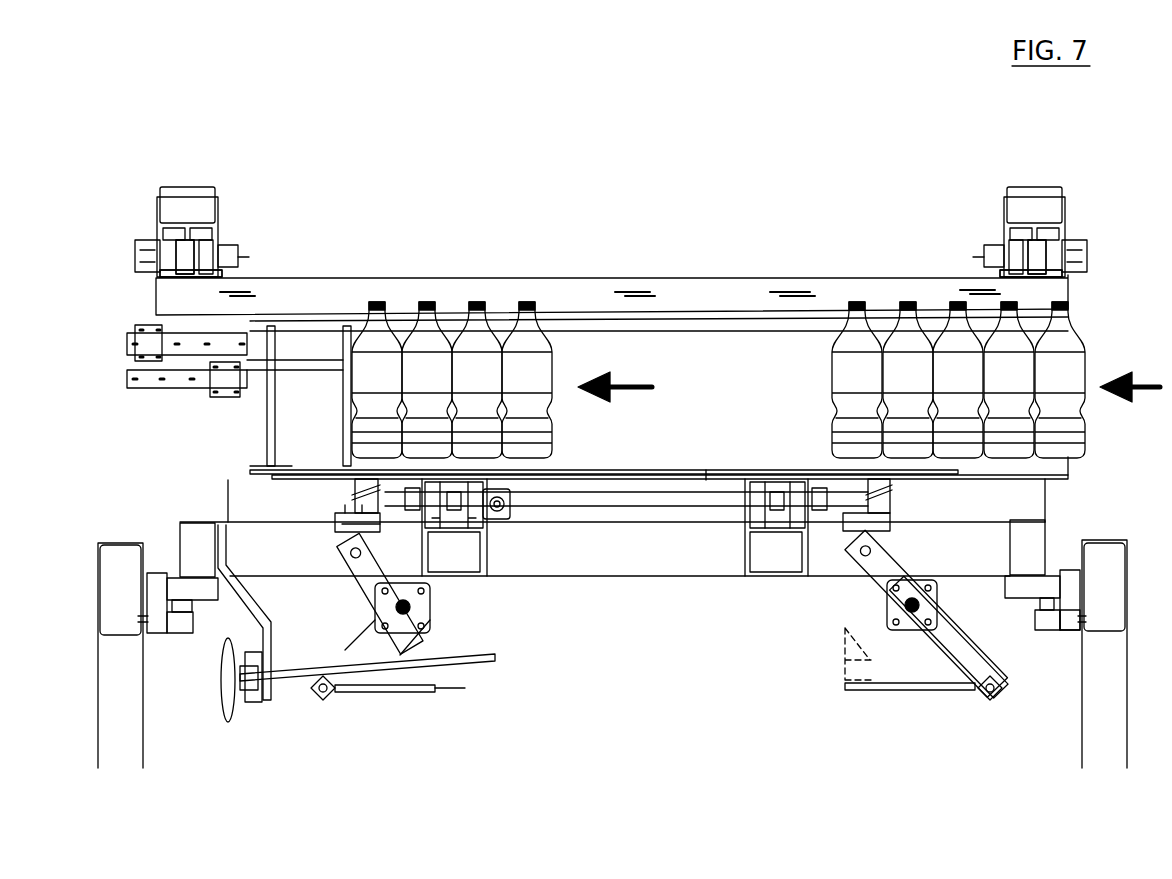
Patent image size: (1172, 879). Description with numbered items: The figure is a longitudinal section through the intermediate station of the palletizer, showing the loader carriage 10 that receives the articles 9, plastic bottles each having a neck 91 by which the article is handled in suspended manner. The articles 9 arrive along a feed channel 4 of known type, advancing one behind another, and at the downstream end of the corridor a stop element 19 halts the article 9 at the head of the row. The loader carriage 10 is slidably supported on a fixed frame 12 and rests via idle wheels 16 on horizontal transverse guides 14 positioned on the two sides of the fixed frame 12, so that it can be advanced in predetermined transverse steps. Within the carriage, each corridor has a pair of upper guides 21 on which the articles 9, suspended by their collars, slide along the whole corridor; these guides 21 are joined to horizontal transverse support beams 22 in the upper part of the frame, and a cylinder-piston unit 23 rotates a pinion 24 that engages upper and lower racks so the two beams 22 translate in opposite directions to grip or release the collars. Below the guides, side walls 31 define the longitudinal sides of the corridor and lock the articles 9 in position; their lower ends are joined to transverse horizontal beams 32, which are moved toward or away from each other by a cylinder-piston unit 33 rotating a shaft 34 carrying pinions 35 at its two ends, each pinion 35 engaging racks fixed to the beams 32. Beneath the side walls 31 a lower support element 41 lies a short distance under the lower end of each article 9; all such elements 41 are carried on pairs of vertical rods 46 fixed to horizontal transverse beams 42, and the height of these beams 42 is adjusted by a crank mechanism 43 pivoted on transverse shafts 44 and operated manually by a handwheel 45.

The feed channel 4 is at (1072, 628).
The article 9 is at (537, 412).
The loader carriage 10 is at (668, 272).
The fixed frame 12 is at (150, 750).
The horizontal transverse guide 14 is at (160, 636).
The idle wheel 16 is at (152, 574).
The stop element 19 is at (272, 406).
The upper guide 21 is at (330, 300).
The horizontal transverse support beam 22 is at (205, 287).
The cylinder-piston unit 23 is at (142, 252).
The pinion 24 is at (178, 252).
The side wall 31 is at (728, 330).
The transverse horizontal beam 32 is at (545, 470).
The cylinder-piston unit 33 is at (512, 522).
The shaft 34 is at (620, 496).
The pinion 35 is at (462, 532).
The lower support element 41 is at (706, 470).
The horizontal transverse beam 42 is at (340, 521).
The crank mechanism 43 is at (352, 704).
The transverse shaft 44 is at (380, 598).
The handwheel 45 is at (244, 706).
The vertical rod 46 is at (352, 496).
The neck 91 is at (546, 314).